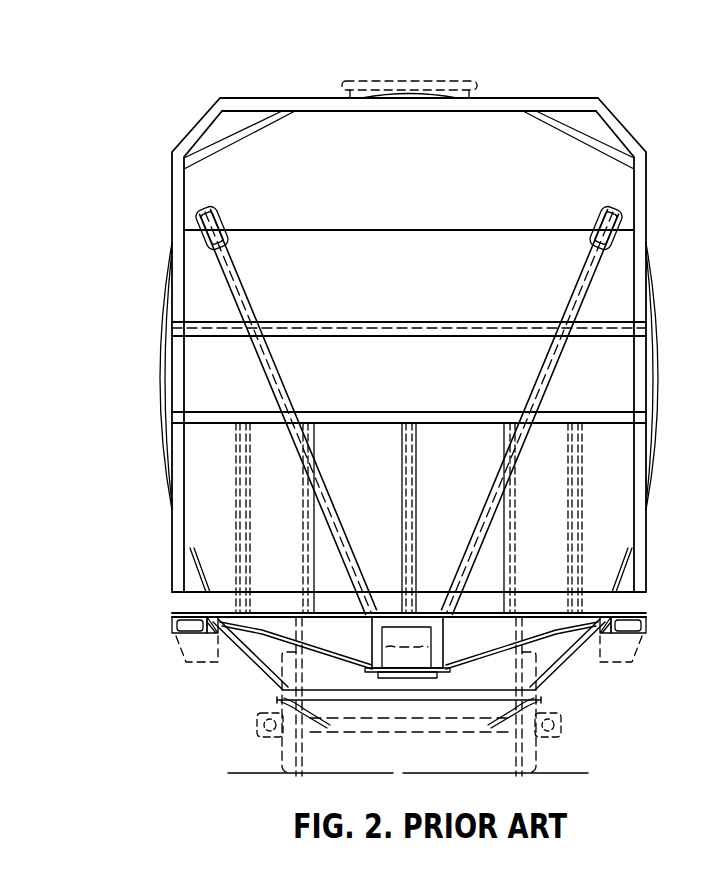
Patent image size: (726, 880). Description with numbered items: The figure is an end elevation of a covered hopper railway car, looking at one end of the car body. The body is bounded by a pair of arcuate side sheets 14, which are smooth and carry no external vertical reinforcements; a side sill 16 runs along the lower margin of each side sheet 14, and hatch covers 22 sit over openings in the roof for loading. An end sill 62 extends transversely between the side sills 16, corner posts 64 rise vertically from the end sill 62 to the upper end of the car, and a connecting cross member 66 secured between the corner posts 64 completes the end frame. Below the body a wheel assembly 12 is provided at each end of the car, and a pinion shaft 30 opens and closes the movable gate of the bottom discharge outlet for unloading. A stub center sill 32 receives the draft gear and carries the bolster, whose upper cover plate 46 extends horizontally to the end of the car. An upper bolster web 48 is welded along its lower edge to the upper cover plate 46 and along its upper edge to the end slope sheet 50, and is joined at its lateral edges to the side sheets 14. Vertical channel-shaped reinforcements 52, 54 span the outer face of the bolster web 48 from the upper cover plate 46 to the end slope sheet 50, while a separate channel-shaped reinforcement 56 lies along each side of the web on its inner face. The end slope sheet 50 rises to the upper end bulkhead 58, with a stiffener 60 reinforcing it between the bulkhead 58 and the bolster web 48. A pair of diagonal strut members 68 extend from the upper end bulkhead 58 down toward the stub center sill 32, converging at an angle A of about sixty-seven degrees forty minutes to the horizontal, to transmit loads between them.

The wheel assembly 12 is at (540, 755).
The arcuate side sheets 14 is at (162, 392).
The side sill 16 is at (172, 628).
The hatch covers 22 is at (428, 76).
The pinion shaft 30 is at (306, 731).
The stub center sill 32 is at (438, 652).
The upper cover plate 46 is at (270, 612).
The upper bolster web 48 is at (467, 488).
The end slope sheet 50 is at (432, 292).
The channel-shaped reinforcement 52 is at (416, 444).
The channel-shaped reinforcement 54 is at (302, 498).
The channel-shaped reinforcement 56 is at (235, 487).
The upper end bulkhead 58 is at (428, 175).
The stiffener 60 is at (453, 322).
The end sill 62 is at (636, 599).
The corner posts 64 is at (178, 263).
The connecting cross member 66 is at (527, 100).
The diagonal strut members 68 is at (243, 293).
The angle A is at (318, 613).